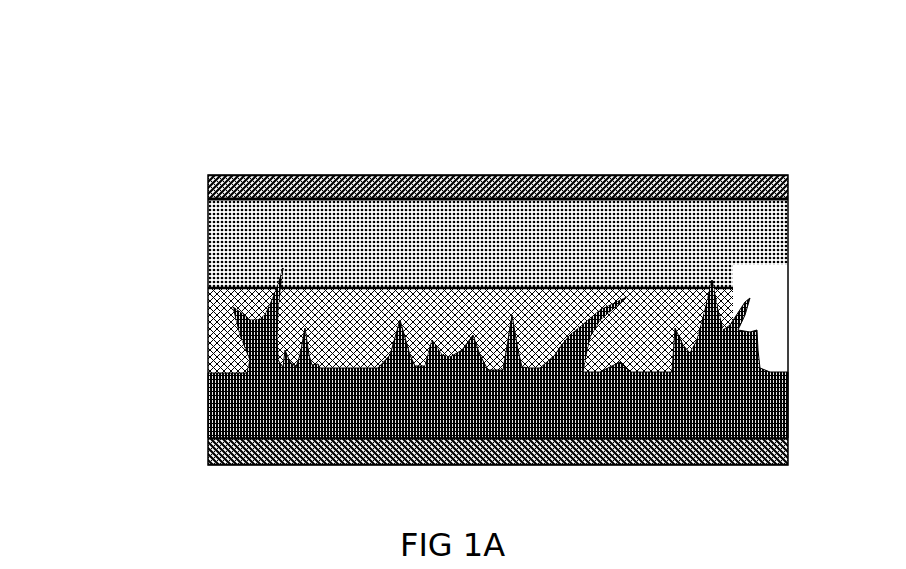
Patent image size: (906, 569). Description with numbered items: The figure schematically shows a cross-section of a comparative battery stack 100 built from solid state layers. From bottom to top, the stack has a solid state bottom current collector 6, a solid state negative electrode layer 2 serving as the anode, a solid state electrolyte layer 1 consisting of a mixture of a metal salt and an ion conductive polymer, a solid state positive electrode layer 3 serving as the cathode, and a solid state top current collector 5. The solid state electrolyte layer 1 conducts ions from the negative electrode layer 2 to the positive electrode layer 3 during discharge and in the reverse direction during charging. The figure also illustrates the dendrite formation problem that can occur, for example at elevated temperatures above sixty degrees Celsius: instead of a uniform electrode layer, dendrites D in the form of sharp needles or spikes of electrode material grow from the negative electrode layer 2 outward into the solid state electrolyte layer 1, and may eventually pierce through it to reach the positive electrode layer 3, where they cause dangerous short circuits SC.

The comparative battery stack 100 is at (130, 82).
The solid state electrolyte layer 1 is at (228, 348).
The solid state negative electrode layer 2 is at (263, 407).
The solid state positive electrode layer 3 is at (240, 240).
The solid state top current collector 5 is at (240, 188).
The solid state bottom current collector 6 is at (250, 453).
The short circuits SC is at (283, 258).
The dendrites D is at (708, 357).